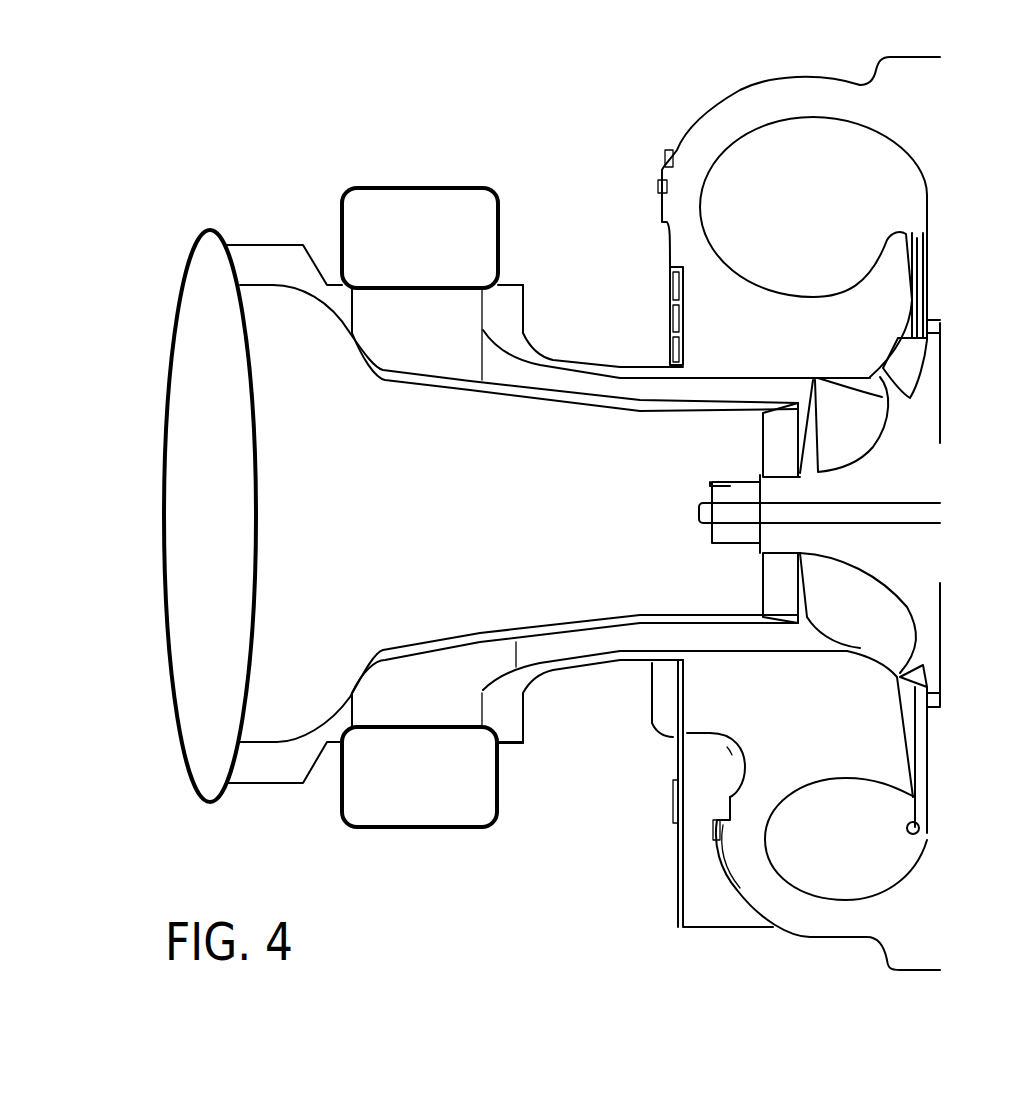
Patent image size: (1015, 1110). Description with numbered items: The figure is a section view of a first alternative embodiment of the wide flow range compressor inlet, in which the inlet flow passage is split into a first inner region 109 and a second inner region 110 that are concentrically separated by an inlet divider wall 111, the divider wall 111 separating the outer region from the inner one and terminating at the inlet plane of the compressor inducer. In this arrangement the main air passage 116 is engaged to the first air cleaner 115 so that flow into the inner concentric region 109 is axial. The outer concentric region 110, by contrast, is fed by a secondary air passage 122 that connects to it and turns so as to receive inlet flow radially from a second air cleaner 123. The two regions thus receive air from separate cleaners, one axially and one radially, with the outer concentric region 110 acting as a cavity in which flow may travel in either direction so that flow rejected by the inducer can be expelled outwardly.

The first inner region 109 is at (632, 507).
The second inner region 110 is at (664, 387).
The inlet divider wall 111 is at (640, 610).
The first air cleaner 115 is at (190, 557).
The main air passage 116 is at (367, 537).
The secondary air passage 122 is at (432, 328).
The second air cleaner 123 is at (437, 213).